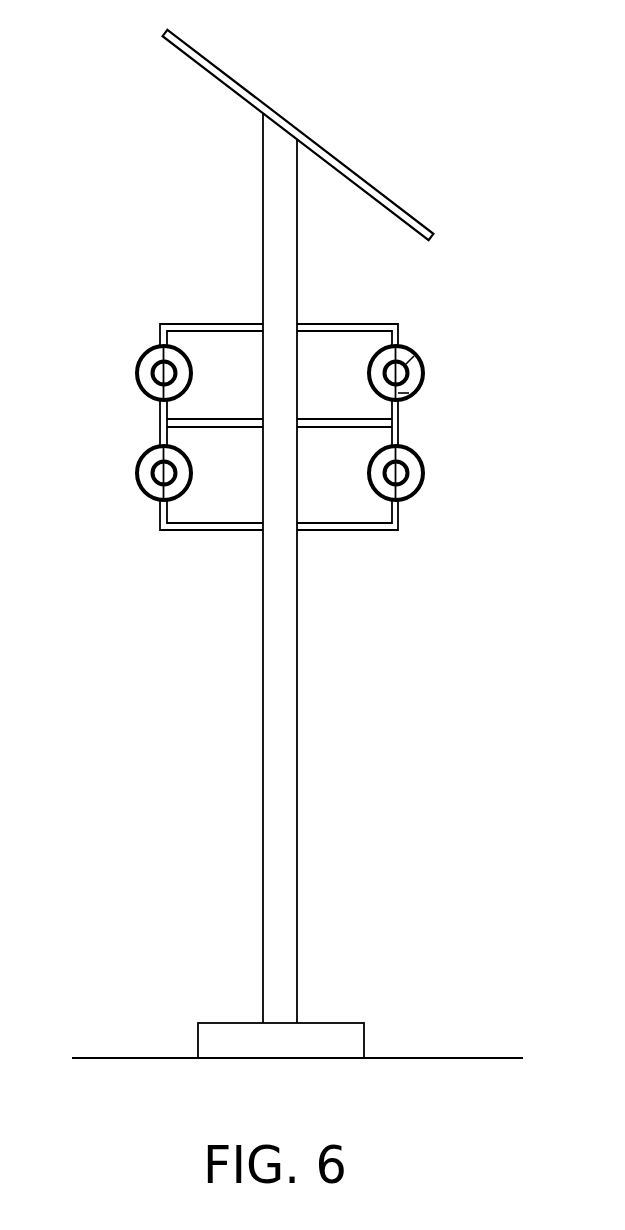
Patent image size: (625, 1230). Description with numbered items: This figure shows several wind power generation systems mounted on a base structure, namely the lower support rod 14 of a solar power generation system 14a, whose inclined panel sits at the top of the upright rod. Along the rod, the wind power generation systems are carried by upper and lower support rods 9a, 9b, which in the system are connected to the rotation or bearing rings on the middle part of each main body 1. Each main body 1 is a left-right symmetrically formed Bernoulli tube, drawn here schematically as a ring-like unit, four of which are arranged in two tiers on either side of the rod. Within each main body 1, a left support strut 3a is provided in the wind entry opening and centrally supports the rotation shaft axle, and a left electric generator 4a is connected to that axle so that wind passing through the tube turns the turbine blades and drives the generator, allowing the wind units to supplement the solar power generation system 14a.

The main body 1 is at (133, 375).
The left support strut 3a is at (417, 396).
The left electric generator 4a is at (407, 360).
The upper support rod 9a is at (400, 330).
The lower support rod 9b is at (397, 410).
The lower support rod 14 is at (283, 687).
The solar power generation system 14a is at (353, 170).